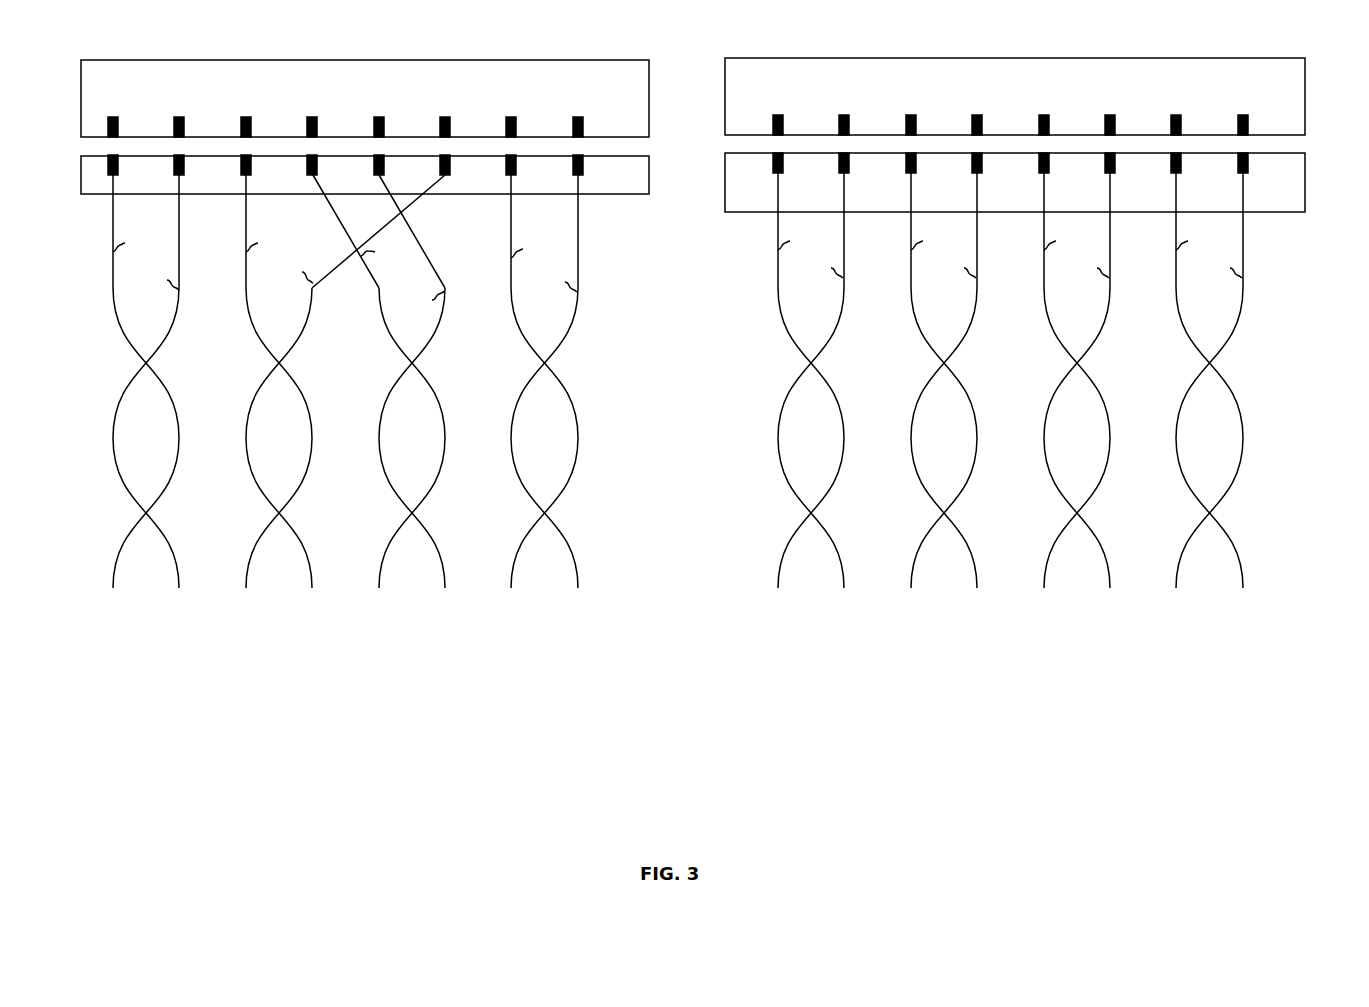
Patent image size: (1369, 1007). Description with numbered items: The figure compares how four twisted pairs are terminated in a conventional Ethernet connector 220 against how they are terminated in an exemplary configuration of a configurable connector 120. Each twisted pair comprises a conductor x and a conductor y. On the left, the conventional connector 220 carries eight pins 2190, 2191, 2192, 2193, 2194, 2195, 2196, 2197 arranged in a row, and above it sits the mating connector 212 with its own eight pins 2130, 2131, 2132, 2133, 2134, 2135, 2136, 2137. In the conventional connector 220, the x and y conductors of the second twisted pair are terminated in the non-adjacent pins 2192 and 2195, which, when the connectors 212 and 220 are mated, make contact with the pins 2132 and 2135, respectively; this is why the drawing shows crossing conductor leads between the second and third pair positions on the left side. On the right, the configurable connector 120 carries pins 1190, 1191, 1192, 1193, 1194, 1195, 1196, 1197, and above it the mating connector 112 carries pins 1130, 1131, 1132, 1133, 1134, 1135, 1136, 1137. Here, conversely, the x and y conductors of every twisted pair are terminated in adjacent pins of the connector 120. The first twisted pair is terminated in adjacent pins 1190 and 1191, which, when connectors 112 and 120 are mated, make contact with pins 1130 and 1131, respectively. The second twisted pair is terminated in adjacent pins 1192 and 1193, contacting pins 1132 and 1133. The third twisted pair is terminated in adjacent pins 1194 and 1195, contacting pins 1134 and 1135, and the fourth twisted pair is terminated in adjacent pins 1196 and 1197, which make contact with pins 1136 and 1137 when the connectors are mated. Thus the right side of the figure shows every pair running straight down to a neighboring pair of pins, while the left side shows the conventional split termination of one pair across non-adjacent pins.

The connector 212 is at (81, 94).
The conventional Ethernet connector 220 is at (81, 174).
The connector 112 is at (1305, 94).
The connector 120 is at (1305, 190).
The pin 2130 is at (113, 116).
The pin 2131 is at (179, 116).
The pin 2132 is at (246, 116).
The pin 2133 is at (312, 116).
The pin 2134 is at (379, 116).
The pin 2135 is at (445, 116).
The pin 2136 is at (511, 116).
The pin 2137 is at (578, 116).
The pin 2190 is at (118, 159).
The pin 2191 is at (184, 159).
The pin 2192 is at (251, 159).
The pin 2193 is at (317, 159).
The pin 2194 is at (384, 159).
The pin 2195 is at (450, 159).
The pin 2196 is at (516, 159).
The pin 2197 is at (583, 159).
The pin 1130 is at (783, 105).
The pin 1131 is at (849, 105).
The pin 1132 is at (916, 105).
The pin 1133 is at (982, 105).
The pin 1134 is at (1049, 105).
The pin 1135 is at (1115, 105).
The pin 1136 is at (1181, 105).
The pin 1137 is at (1248, 105).
The pin 1190 is at (783, 174).
The pin 1191 is at (849, 174).
The pin 1192 is at (916, 174).
The pin 1193 is at (982, 174).
The pin 1194 is at (1049, 174).
The pin 1195 is at (1115, 174).
The pin 1196 is at (1181, 174).
The pin 1197 is at (1248, 174).